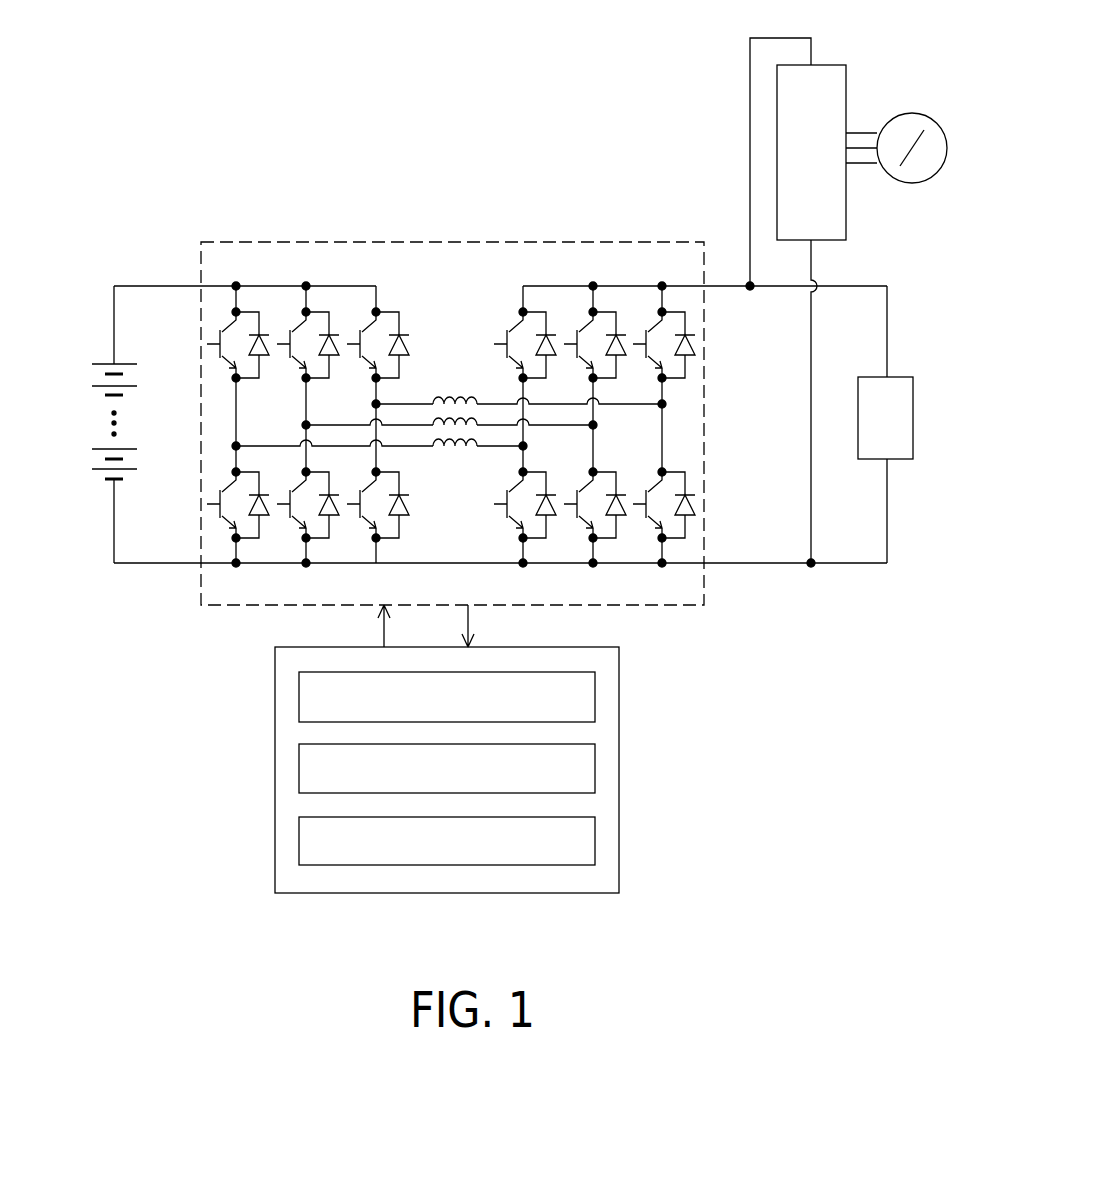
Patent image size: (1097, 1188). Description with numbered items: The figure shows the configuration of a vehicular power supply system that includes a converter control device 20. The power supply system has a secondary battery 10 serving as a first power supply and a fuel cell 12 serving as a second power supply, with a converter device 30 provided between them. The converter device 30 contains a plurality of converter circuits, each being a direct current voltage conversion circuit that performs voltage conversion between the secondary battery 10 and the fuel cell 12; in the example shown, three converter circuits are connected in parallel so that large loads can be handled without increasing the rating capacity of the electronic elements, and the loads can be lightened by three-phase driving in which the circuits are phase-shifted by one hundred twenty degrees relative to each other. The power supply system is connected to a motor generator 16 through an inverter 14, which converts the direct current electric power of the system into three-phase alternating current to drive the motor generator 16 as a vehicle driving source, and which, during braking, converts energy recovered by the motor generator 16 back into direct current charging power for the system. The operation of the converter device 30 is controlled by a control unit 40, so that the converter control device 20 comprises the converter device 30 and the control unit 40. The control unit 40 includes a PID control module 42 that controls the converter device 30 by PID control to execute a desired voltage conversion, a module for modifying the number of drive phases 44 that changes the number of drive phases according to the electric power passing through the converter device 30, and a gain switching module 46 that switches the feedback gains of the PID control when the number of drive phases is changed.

The secondary battery 10 is at (102, 423).
The fuel cell 12 is at (905, 459).
The inverter 14 is at (847, 75).
The motor generator 16 is at (917, 183).
The converter control device 20 is at (183, 686).
The converter device 30 is at (197, 582).
The control unit 40 is at (440, 749).
The PID control module 42 is at (595, 696).
The module for modifying the number of drive phases 44 is at (595, 768).
The gain switching module 46 is at (595, 840).